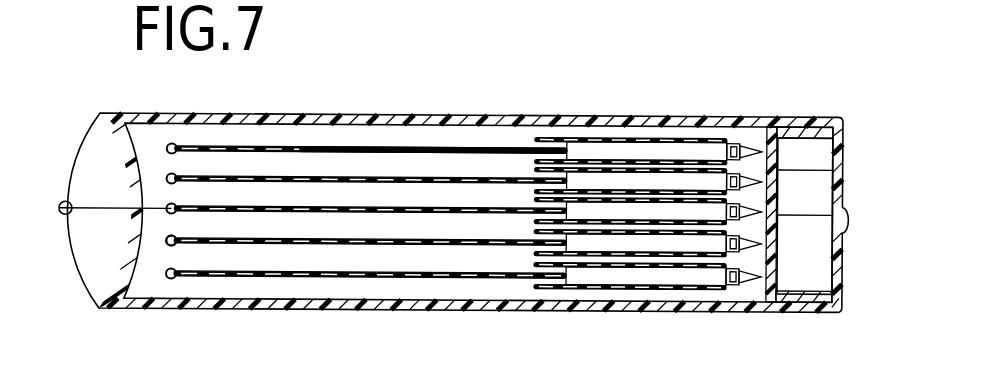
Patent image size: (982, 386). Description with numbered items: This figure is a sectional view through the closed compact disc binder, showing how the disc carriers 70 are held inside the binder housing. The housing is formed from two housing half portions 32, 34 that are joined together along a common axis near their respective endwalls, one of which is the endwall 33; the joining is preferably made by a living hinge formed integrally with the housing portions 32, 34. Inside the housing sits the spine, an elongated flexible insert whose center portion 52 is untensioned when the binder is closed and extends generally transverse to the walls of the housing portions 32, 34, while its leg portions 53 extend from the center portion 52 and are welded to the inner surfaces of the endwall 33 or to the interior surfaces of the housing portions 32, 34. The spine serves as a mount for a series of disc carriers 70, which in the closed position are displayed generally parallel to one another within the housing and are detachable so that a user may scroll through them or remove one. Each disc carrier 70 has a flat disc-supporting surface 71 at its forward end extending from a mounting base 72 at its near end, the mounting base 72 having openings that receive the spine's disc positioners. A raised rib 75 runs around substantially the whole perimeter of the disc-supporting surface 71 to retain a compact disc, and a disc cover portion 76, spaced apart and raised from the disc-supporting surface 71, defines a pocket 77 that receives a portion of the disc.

The housing half portion 32 is at (325, 122).
The endwall 33 is at (468, 5).
The housing half portion 34 is at (370, 310).
The center portion 52 is at (842, 168).
The leg portion 53 is at (812, 126).
The disc carrier 70 is at (202, 145).
The disc-supporting surface 71 is at (434, 137).
The mounting base 72 is at (752, 147).
The raised rib 75 is at (168, 240).
The disc cover portion 76 is at (605, 142).
The pocket 77 is at (625, 158).